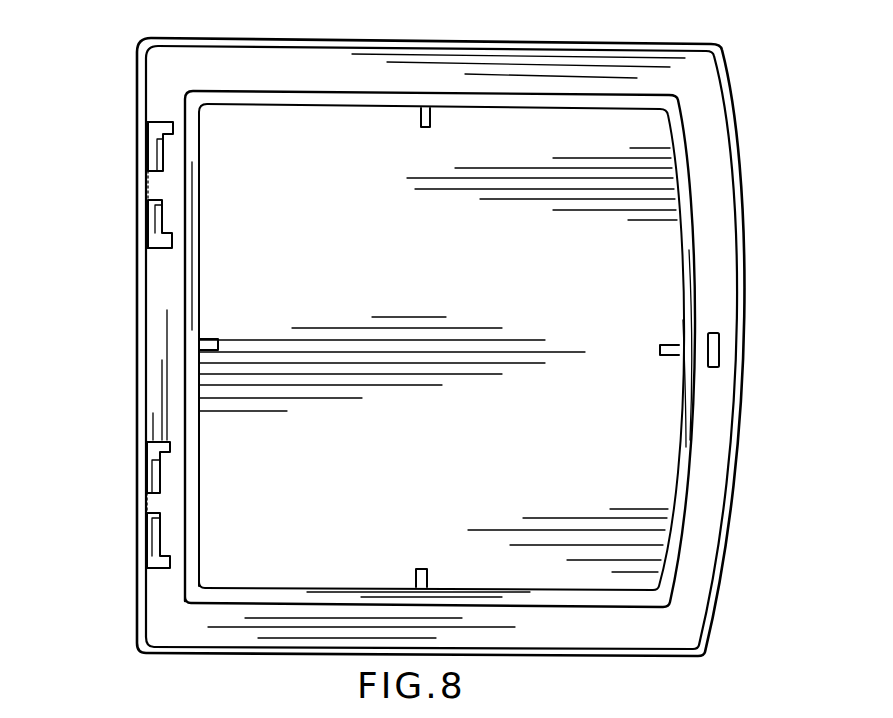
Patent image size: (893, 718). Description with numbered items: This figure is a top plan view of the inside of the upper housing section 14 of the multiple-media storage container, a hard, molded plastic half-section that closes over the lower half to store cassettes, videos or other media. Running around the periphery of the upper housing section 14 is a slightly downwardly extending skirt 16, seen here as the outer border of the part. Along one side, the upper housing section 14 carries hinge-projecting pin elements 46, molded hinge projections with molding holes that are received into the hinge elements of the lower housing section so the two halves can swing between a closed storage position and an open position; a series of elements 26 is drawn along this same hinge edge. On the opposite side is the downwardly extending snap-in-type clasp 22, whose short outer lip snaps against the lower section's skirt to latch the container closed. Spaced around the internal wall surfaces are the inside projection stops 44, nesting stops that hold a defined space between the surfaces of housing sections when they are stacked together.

The upper housing section 14 is at (112, 31).
The skirt 16 is at (726, 148).
The snap-in-type clasp 22 is at (720, 352).
The mounting clip 26 is at (160, 125).
The projection stops 44 is at (428, 125).
The hinge-projecting pin elements 46 is at (158, 192).